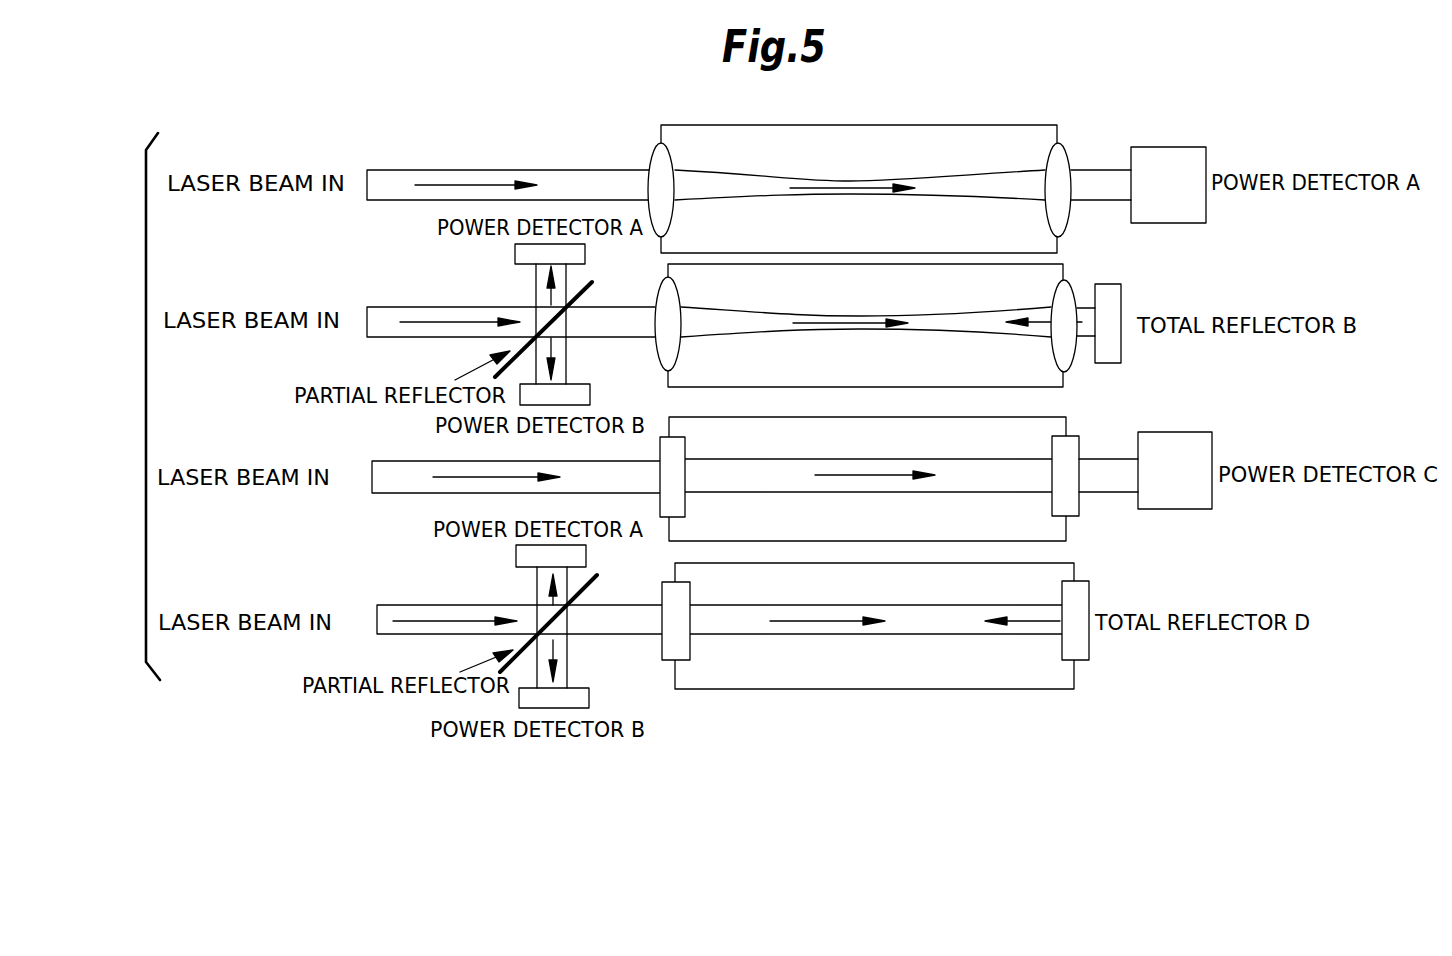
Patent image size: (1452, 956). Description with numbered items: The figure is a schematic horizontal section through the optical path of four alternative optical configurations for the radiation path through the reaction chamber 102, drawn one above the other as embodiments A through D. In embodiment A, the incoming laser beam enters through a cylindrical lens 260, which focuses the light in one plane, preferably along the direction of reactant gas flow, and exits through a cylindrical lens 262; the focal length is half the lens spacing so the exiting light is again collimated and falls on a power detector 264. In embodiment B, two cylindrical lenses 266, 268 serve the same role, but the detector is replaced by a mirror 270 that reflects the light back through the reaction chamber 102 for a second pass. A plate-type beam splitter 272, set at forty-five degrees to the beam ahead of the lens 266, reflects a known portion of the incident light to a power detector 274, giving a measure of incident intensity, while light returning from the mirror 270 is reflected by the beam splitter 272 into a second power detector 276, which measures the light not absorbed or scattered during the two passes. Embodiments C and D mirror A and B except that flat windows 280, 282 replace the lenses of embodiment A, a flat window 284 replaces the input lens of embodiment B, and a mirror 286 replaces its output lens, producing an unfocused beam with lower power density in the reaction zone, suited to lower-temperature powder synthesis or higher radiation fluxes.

The reaction chamber 102 is at (1030, 390).
The cylindrical lens 260 is at (655, 160).
The cylindrical lens 262 is at (1067, 150).
The power detector 264 is at (1178, 223).
The cylindrical lens 266 is at (658, 357).
The cylindrical lens 268 is at (1075, 366).
The mirror 270 is at (1118, 296).
The beam splitter 272 is at (585, 291).
The power detector 274 is at (515, 250).
The power detector 276 is at (591, 394).
The flat window 280 is at (660, 450).
The flat window 282 is at (1079, 443).
The flat window 284 is at (663, 648).
The mirror 286 is at (1090, 650).